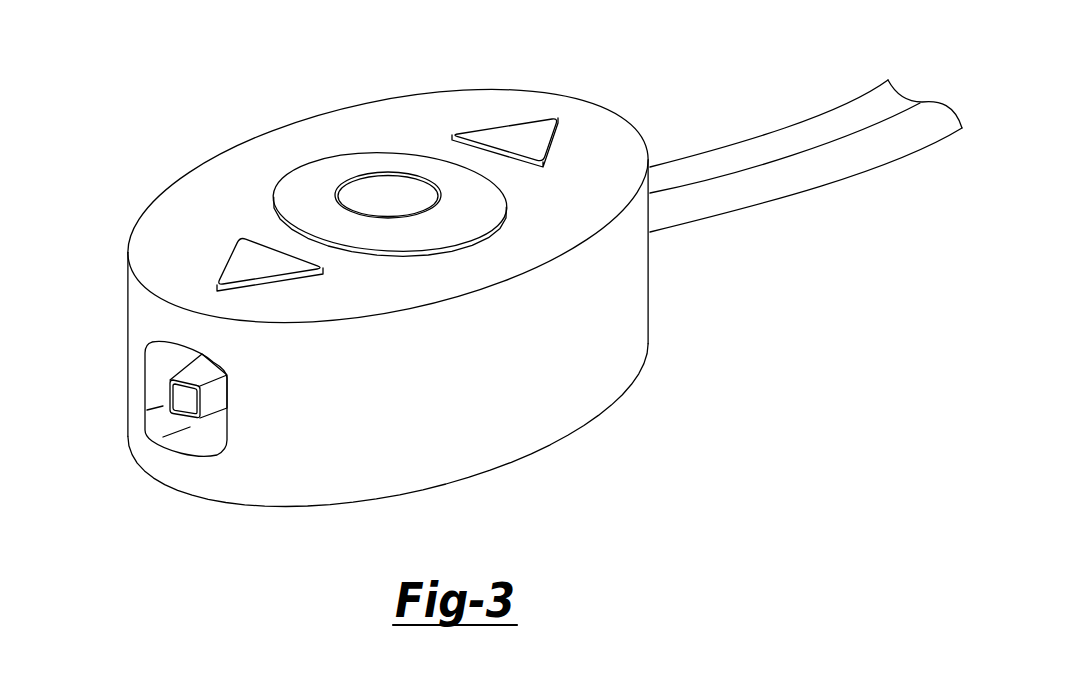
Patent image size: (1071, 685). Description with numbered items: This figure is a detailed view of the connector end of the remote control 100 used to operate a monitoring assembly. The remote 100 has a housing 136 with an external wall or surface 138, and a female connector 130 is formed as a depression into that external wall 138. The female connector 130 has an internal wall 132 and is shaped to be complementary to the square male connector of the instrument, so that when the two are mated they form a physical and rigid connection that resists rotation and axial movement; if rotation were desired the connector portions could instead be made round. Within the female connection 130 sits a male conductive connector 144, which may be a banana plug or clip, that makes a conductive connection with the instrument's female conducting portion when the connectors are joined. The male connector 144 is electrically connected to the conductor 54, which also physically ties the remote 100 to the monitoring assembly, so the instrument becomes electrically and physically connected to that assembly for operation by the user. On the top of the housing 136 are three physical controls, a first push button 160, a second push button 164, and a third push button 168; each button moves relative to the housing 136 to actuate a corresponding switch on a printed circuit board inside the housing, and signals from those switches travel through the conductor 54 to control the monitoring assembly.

The remote control 100 is at (242, 82).
The housing 136 is at (215, 150).
The external wall 138 is at (152, 310).
The third push button 168 is at (353, 167).
The first push button 160 is at (267, 263).
The second push button 164 is at (525, 127).
The female connector 130 is at (224, 466).
The internal wall 132 is at (153, 363).
The male conductive connector 144 is at (186, 402).
The conductor 54 is at (773, 146).